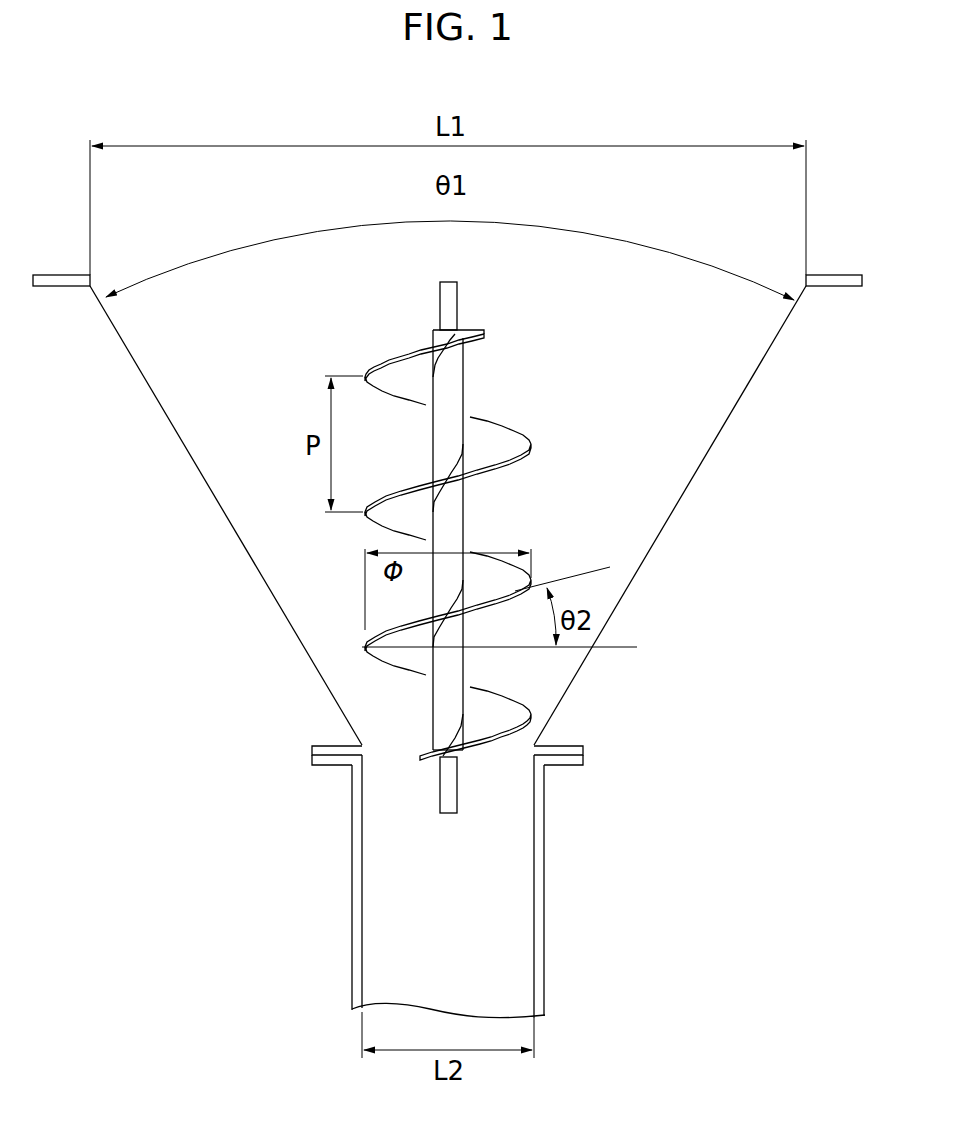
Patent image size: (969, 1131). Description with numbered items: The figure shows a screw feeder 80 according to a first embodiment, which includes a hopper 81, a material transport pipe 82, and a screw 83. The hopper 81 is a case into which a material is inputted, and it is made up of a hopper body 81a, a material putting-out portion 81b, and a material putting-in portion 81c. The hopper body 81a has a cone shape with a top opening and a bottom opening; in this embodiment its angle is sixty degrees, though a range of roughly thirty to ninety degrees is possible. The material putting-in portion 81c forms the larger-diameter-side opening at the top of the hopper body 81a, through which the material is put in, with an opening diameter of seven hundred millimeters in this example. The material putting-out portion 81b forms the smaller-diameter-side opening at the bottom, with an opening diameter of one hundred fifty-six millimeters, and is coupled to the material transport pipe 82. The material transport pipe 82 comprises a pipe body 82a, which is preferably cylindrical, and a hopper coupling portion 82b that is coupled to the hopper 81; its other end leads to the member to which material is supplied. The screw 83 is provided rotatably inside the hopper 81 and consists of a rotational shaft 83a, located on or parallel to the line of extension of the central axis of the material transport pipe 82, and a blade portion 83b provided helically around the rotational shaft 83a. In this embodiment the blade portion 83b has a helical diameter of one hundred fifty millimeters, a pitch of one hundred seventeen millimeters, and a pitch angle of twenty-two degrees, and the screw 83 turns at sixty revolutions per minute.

The screw feeder 80 is at (836, 209).
The hopper 81 is at (728, 461).
The hopper body 81a is at (663, 535).
The material putting-out portion 81b is at (573, 747).
The material putting-in portion 81c is at (834, 283).
The material transport pipe 82 is at (670, 773).
The pipe body 82a is at (545, 938).
The hopper coupling portion 82b is at (573, 760).
The screw 83 is at (502, 401).
The rotational shaft 83a is at (454, 290).
The blade portion 83b is at (526, 442).